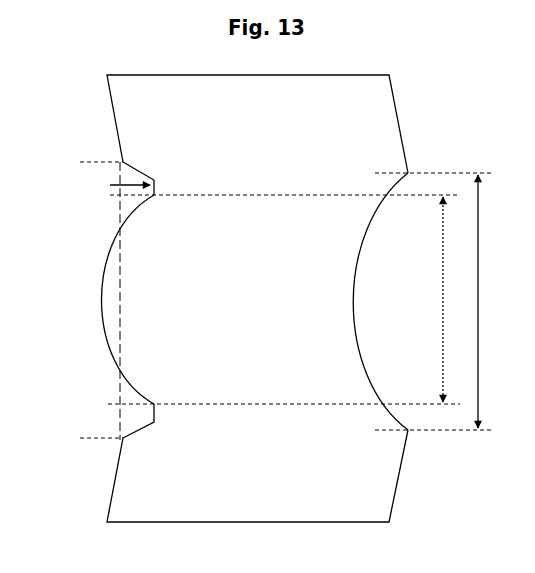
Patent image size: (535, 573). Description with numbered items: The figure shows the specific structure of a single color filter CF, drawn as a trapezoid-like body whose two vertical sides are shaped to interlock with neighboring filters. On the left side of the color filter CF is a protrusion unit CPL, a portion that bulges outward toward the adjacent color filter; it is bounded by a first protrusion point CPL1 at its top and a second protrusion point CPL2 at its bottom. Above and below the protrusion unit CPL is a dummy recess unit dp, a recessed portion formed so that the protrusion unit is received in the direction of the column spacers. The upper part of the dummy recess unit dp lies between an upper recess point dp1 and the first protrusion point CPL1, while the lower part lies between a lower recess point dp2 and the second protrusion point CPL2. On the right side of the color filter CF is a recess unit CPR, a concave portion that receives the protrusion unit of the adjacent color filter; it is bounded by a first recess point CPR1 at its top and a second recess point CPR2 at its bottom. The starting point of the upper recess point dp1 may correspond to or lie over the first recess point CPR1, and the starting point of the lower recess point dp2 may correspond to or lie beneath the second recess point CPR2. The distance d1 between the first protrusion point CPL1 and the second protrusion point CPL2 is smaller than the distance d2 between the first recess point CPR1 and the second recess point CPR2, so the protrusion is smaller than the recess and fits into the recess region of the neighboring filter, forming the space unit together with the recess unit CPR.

The color filter CF is at (120, 113).
The protrusion unit CPL is at (103, 298).
The recess unit CPR is at (355, 300).
The dummy recess unit dp is at (155, 180).
The upper recess point dp1 is at (80, 160).
The lower recess point dp2 is at (79, 440).
The first protrusion point CPL1 is at (256, 196).
The second protrusion point CPL2 is at (256, 408).
The first recess point CPR1 is at (406, 173).
The second recess point CPR2 is at (406, 428).
The distance between the first protrusion point and the second protrusion point d1 is at (428, 299).
The distance between the first recess point and the second recess point d2 is at (495, 301).